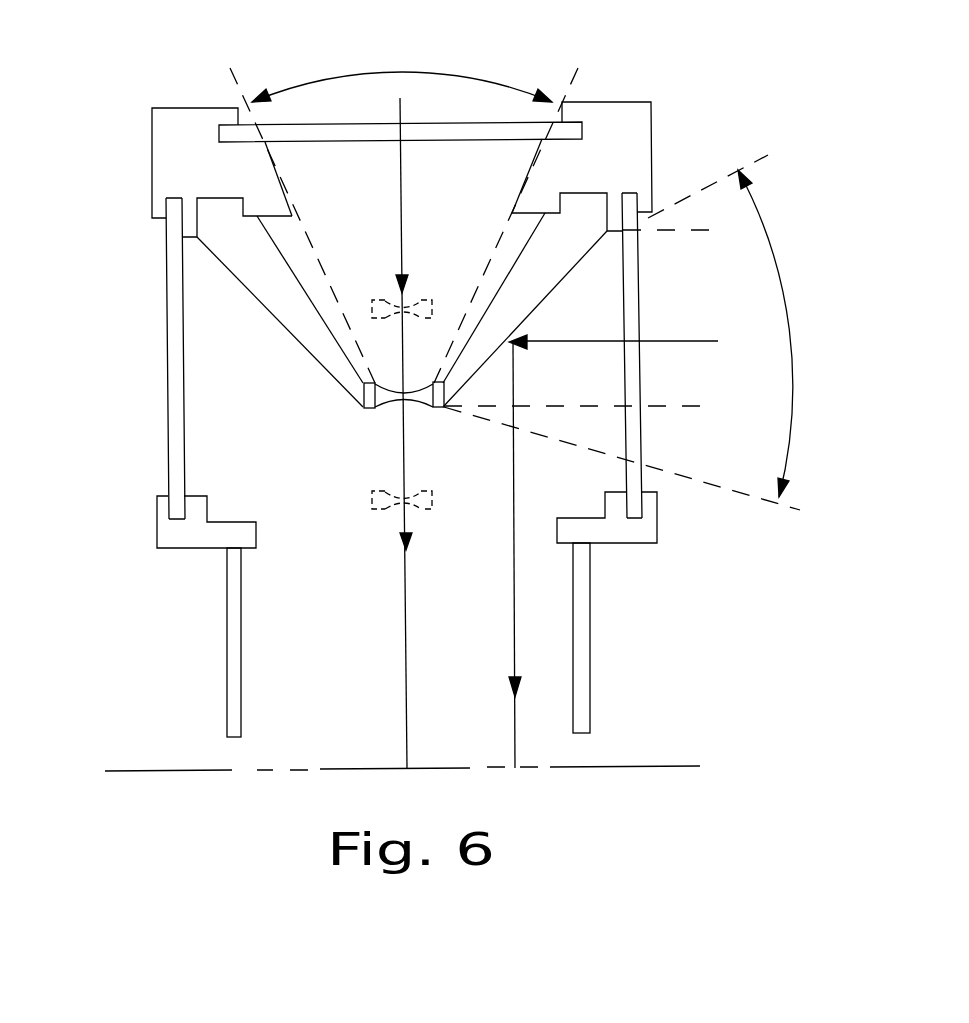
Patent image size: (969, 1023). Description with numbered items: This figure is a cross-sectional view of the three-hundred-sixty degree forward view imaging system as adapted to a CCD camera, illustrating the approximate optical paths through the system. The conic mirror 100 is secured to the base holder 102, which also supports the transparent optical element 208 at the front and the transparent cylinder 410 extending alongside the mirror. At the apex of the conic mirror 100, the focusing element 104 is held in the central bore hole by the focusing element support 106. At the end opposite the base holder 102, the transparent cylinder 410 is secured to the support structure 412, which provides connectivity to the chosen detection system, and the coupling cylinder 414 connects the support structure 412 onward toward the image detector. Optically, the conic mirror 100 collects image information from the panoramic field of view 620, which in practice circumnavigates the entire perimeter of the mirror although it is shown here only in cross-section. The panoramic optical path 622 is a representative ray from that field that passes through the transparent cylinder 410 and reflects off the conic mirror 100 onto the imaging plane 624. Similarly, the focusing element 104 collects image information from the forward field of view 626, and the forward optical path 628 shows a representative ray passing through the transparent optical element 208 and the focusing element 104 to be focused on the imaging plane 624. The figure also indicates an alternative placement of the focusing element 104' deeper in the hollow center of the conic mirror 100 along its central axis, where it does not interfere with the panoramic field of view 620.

The conic mirror 100 is at (252, 264).
The base holder 102 is at (175, 121).
The focusing element 104 is at (259, 430).
The focusing element 104' is at (419, 271).
The focusing element support 106 is at (363, 405).
The transparent optical element 208 is at (228, 130).
The transparent cylinder 410 is at (180, 340).
The support structure 412 is at (165, 532).
The coupling cylinder 414 is at (230, 639).
The panoramic field of view 620 is at (789, 333).
The panoramic optical path 622 is at (668, 341).
The imaging plane 624 is at (180, 768).
The forward field of view 626 is at (397, 72).
The forward optical path 628 is at (398, 110).